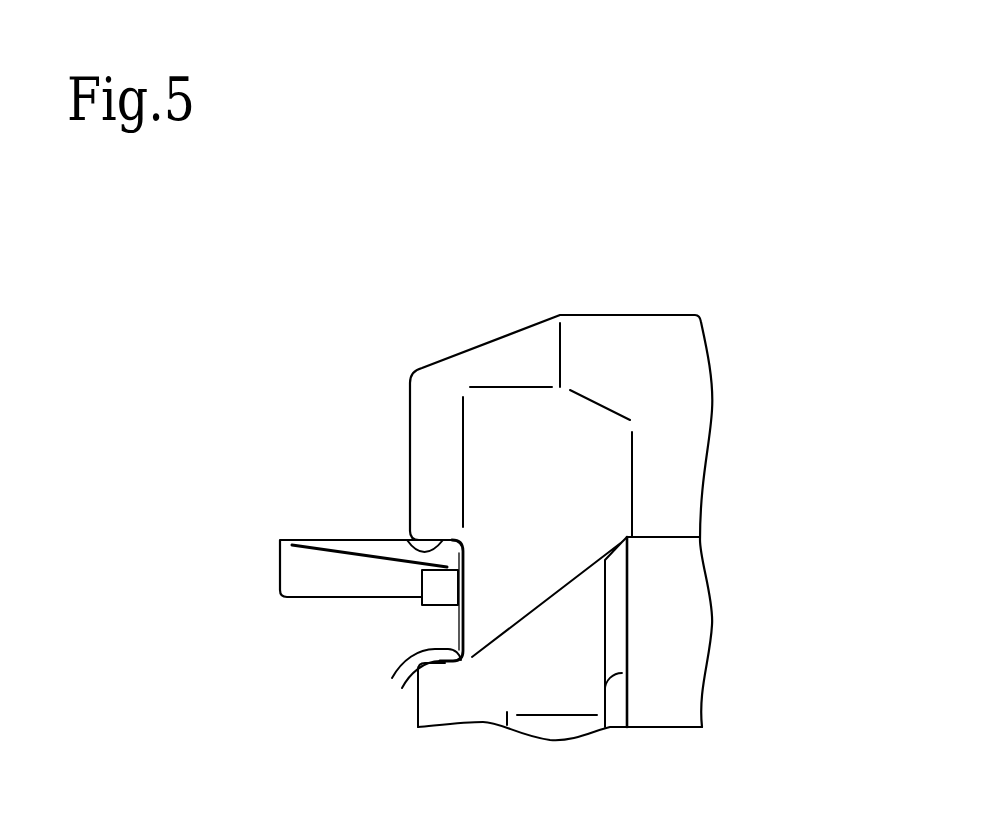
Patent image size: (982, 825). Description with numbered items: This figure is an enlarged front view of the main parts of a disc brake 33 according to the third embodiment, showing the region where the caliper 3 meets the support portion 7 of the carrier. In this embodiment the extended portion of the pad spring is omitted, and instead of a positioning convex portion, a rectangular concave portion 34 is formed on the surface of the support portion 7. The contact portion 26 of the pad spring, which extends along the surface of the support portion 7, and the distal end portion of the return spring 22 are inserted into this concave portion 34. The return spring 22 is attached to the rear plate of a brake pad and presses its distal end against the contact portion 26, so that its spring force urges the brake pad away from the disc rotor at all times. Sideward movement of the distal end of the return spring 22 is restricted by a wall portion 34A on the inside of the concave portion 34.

The disc brake 33 is at (730, 280).
The caliper 3 is at (627, 347).
The support portion 7 is at (440, 387).
The return spring 22 is at (297, 579).
The contact portion 26 is at (458, 627).
The concave portion 34 is at (392, 678).
The wall portion 34A is at (408, 541).